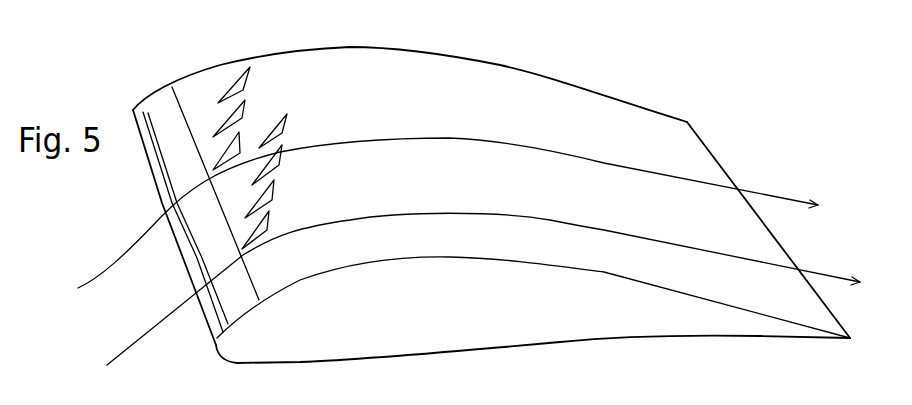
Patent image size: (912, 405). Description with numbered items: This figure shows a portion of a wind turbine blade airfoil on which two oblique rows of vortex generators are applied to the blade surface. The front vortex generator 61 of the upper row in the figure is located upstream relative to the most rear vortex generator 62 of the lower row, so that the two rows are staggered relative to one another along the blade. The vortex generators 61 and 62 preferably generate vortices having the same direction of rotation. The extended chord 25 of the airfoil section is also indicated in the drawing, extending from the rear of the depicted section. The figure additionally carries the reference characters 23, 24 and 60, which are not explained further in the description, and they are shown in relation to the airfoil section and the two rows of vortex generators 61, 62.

The pressure side surface 23 is at (630, 322).
The suction side surface 24 is at (347, 68).
The extended chord 25 is at (688, 338).
The flow streamlines 60 is at (115, 256).
The front vortex generator of the upper row 61 is at (240, 141).
The rear vortex generator of the lower row 62 is at (288, 132).